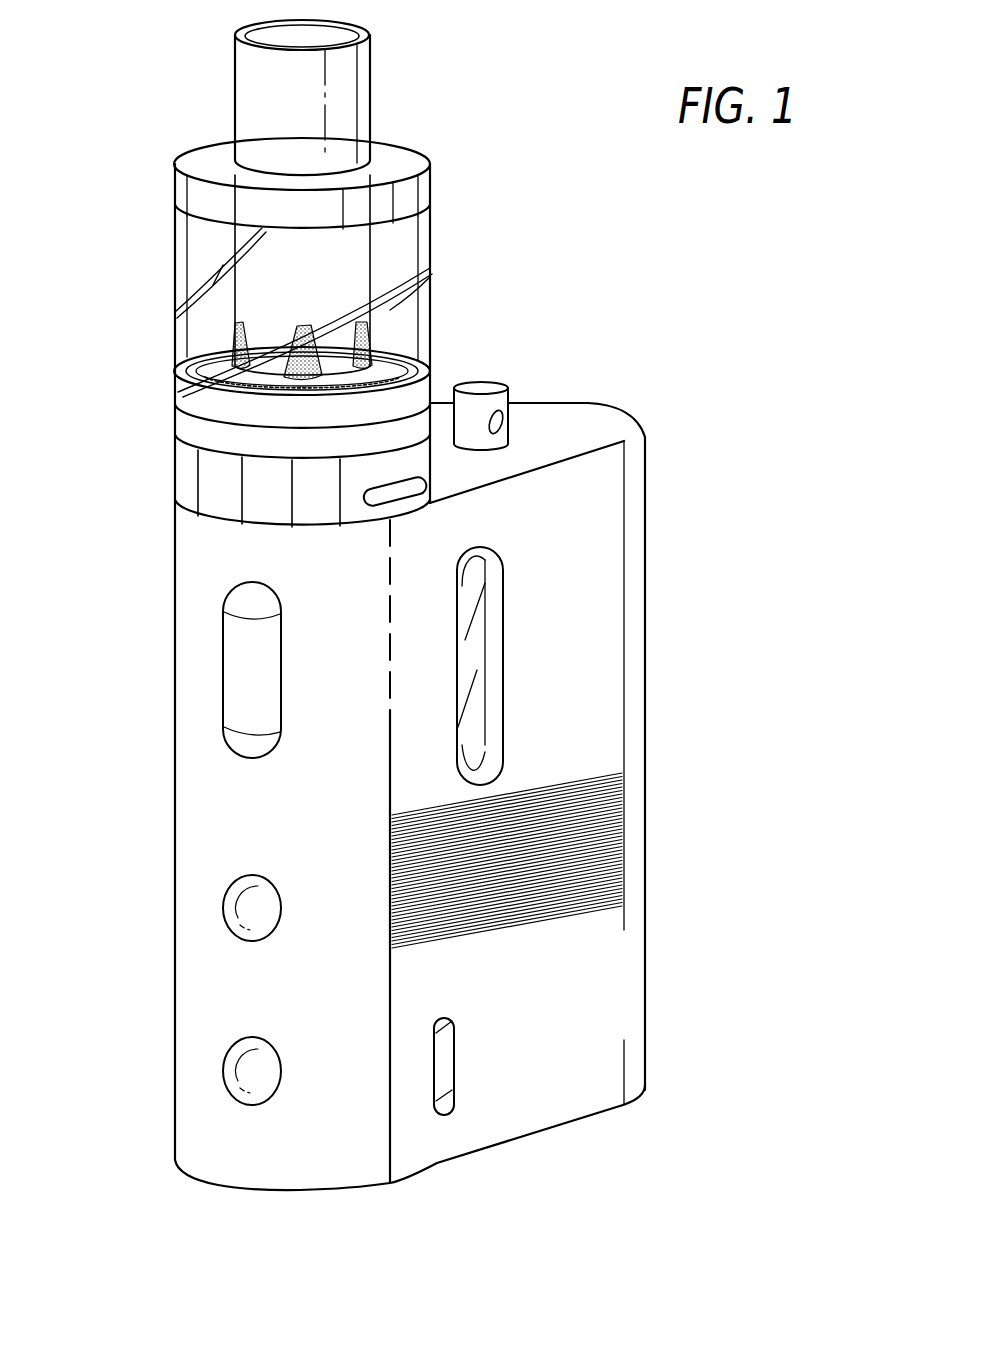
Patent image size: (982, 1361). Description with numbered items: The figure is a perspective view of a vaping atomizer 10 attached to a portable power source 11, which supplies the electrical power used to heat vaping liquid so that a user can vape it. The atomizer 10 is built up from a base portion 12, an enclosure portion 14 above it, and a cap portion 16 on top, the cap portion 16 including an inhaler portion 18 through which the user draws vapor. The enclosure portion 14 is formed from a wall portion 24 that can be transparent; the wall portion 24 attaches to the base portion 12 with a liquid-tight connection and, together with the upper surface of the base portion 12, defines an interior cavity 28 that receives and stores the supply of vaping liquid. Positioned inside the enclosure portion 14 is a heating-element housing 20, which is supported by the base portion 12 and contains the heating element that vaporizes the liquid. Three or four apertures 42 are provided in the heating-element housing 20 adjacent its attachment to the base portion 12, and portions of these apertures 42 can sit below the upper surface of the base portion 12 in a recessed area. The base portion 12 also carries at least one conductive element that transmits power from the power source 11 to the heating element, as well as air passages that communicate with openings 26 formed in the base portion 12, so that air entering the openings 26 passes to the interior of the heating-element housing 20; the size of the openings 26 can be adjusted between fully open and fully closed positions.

The vaping atomizer 10 is at (438, 233).
The portable power source 11 is at (650, 694).
The base portion 12 is at (165, 464).
The enclosure portion 14 is at (170, 278).
The cap portion 16 is at (438, 182).
The inhaler portion 18 is at (383, 71).
The heating-element housing 20 is at (235, 243).
The wall portion 24 is at (432, 348).
The openings 26 is at (397, 496).
The interior cavity 28 is at (417, 317).
The apertures 42 is at (302, 340).